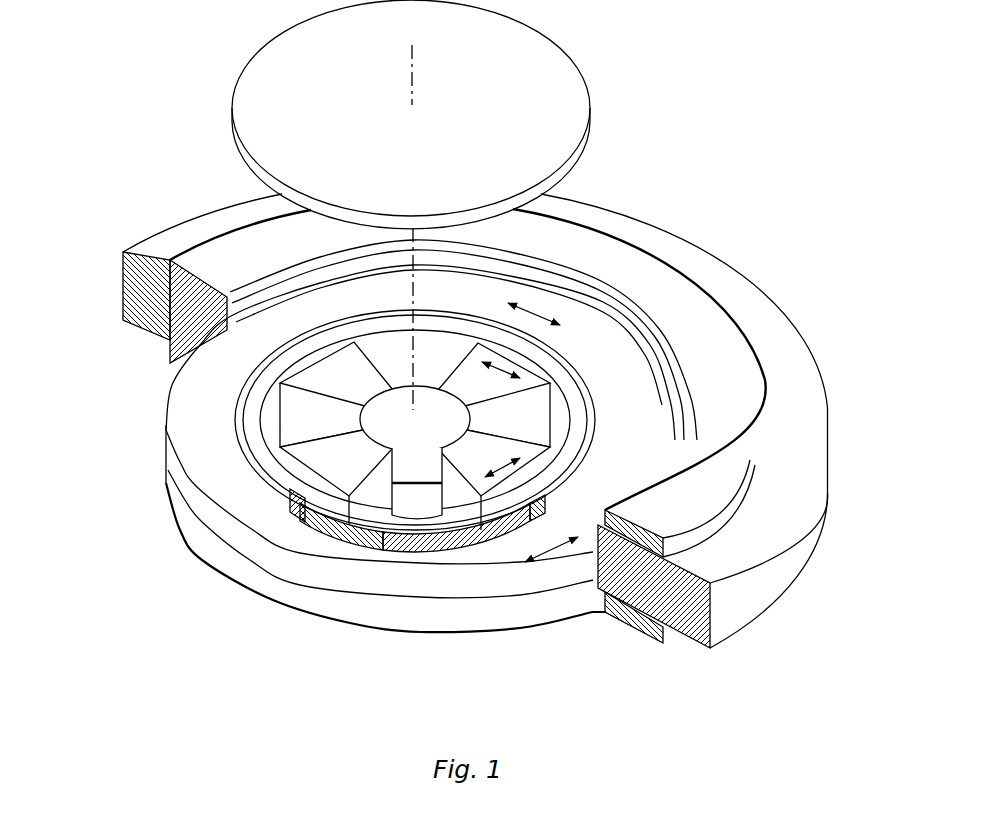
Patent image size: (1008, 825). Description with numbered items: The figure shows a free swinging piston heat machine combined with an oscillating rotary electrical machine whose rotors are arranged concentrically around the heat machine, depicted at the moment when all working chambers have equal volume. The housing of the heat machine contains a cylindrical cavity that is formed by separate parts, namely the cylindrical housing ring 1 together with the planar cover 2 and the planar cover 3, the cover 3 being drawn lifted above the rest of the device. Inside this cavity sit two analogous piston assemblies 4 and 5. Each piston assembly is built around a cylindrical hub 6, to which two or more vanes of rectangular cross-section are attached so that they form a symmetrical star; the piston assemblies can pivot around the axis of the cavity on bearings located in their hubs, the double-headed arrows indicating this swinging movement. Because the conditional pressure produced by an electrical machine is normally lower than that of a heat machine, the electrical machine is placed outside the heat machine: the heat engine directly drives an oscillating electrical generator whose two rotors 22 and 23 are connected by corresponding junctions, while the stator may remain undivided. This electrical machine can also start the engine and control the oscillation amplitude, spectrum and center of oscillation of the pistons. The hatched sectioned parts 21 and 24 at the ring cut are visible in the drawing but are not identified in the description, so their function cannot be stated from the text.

The cylindrical housing ring 1 is at (340, 537).
The planar cover 2 is at (423, 527).
The planar cover 3 is at (557, 117).
The piston assembly 4 is at (536, 401).
The piston assembly 5 is at (525, 468).
The cylindrical hub 6 is at (431, 503).
The piezoelectric element 21 is at (148, 289).
The rotor 22 is at (223, 481).
The rotor 23 is at (201, 542).
The ring cross-section 24 is at (186, 324).